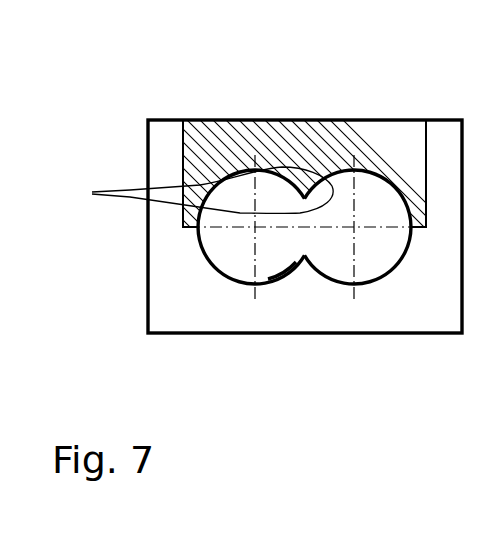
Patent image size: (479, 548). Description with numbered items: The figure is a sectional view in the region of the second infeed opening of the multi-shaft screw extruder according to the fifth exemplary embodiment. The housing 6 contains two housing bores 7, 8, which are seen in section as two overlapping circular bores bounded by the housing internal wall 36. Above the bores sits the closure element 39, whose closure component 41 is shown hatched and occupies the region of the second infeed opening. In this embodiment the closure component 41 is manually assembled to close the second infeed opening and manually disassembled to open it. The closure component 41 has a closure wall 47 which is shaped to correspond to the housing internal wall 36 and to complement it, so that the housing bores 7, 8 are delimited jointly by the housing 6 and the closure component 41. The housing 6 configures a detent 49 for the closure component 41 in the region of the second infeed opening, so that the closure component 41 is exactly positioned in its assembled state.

The housing 6 is at (274, 340).
The housing bore 7 is at (235, 270).
The housing bore 8 is at (365, 268).
The housing internal wall 36 is at (268, 279).
The closure element 39 is at (261, 122).
The closure component 41 is at (269, 121).
The closure wall 47 is at (192, 190).
The detent 49 is at (191, 226).